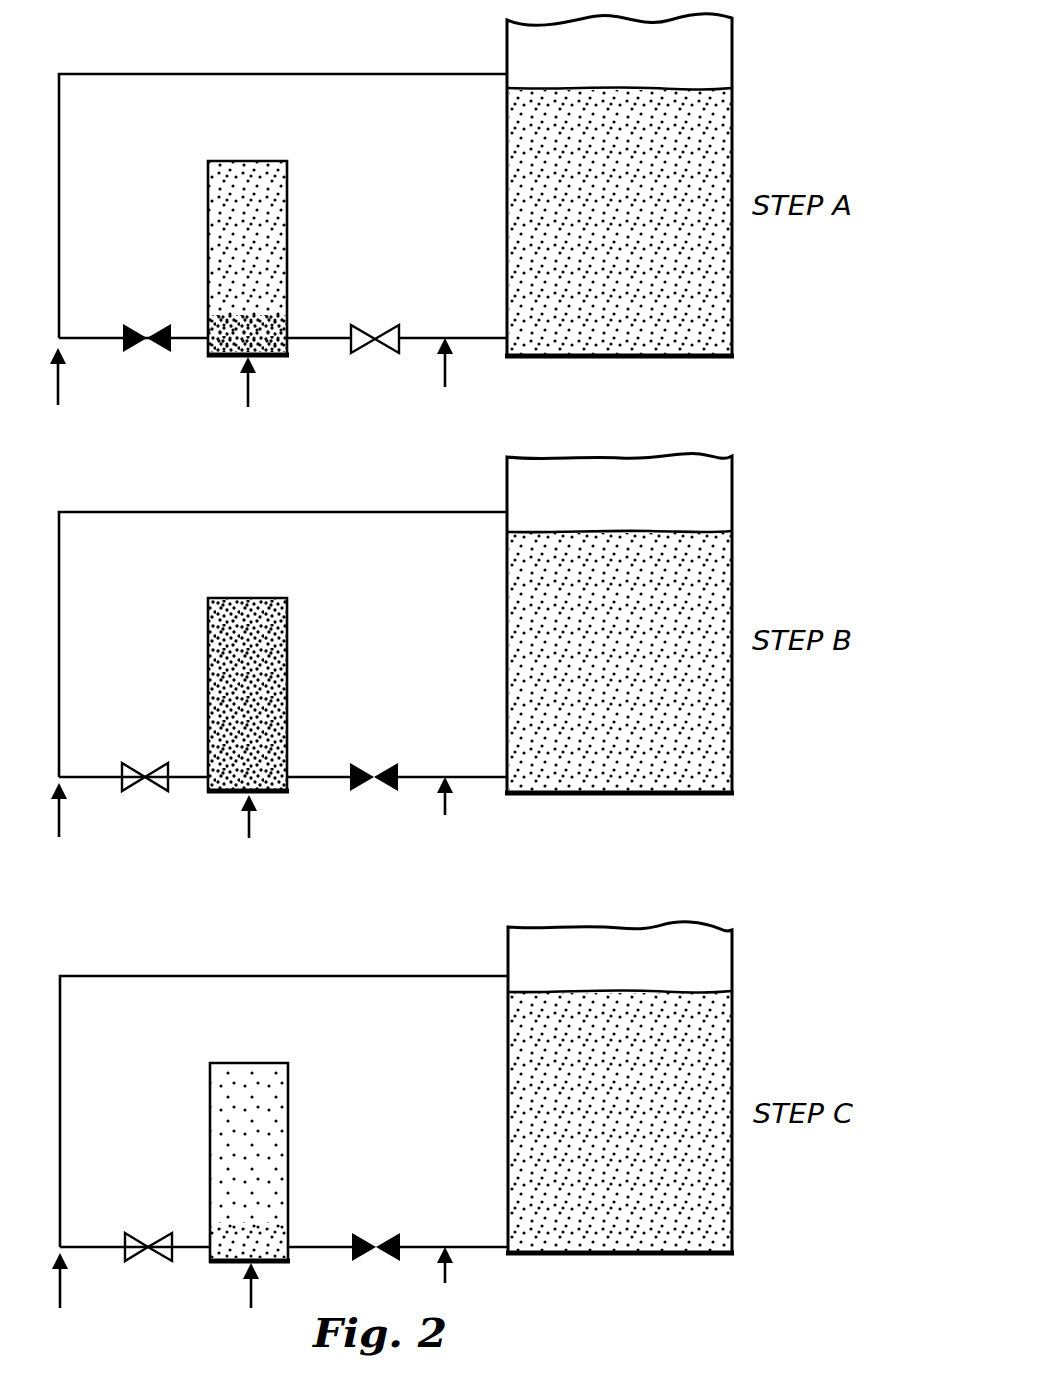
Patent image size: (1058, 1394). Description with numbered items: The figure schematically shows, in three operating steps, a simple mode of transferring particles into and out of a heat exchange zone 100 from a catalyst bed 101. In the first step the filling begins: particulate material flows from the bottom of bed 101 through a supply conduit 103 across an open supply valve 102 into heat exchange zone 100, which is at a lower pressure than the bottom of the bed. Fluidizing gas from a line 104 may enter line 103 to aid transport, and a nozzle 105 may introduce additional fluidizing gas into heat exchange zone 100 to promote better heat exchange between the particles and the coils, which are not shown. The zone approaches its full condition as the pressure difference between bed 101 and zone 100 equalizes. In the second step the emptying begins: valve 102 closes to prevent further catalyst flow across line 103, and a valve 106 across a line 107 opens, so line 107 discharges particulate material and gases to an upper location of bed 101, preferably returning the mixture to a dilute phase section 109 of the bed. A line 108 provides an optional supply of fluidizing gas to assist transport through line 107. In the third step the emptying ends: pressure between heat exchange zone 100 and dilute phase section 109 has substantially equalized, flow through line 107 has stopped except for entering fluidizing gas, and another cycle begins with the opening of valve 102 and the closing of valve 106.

The heat exchange zone 100 is at (288, 212).
The catalyst bed 101 is at (732, 256).
The supply valve 102 is at (372, 325).
The supply conduit 103 is at (317, 336).
The fluidizing gas line 104 is at (445, 368).
The nozzle 105 is at (248, 378).
The valve 106 is at (147, 305).
The discharge line 107 is at (59, 185).
The fluidizing gas line 108 is at (58, 378).
The dilute phase section 109 is at (714, 44).